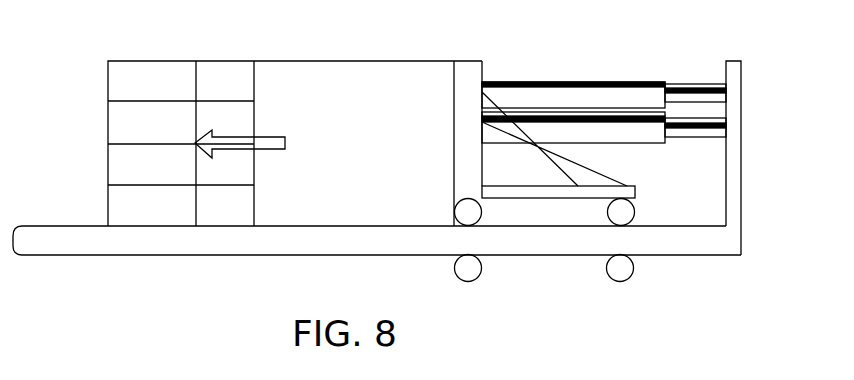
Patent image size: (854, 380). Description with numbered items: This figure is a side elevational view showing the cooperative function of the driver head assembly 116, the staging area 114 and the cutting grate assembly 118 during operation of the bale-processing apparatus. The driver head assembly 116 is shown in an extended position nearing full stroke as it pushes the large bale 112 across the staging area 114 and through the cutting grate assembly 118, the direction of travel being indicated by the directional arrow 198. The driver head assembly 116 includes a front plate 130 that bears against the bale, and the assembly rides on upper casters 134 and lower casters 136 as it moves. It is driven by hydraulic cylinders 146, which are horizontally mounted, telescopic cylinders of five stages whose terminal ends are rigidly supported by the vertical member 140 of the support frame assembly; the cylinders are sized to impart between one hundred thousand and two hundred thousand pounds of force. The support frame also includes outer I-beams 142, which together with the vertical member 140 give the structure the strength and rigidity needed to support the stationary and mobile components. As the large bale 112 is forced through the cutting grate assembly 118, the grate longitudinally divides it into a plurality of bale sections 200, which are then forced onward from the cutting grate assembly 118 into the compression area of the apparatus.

The large bale 112 is at (405, 151).
The staging area 114 is at (349, 256).
The driver head assembly 116 is at (532, 73).
The cutting grate assembly 118 is at (166, 53).
The front plate 130 is at (466, 87).
The upper casters 134 is at (468, 209).
The lower casters 136 is at (468, 266).
The vertical member 140 is at (732, 152).
The outer I-beams 142 is at (430, 244).
The hydraulic cylinders 146 is at (640, 97).
The directional arrow 198 is at (258, 150).
The bale sections 200 is at (122, 134).